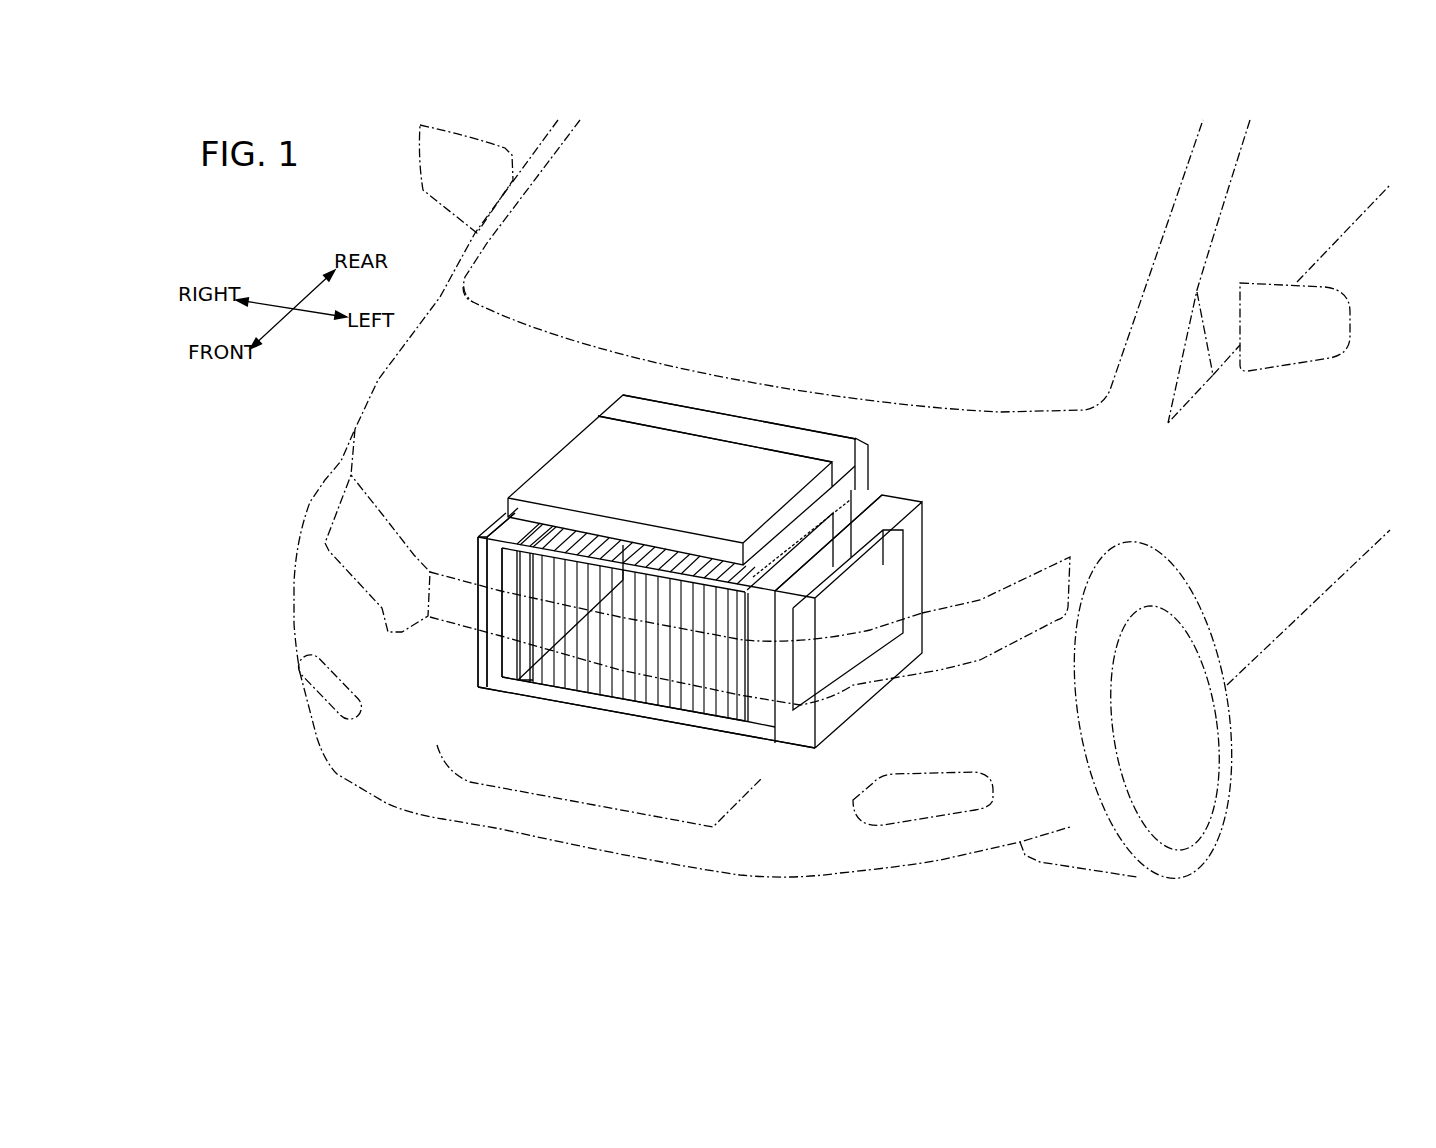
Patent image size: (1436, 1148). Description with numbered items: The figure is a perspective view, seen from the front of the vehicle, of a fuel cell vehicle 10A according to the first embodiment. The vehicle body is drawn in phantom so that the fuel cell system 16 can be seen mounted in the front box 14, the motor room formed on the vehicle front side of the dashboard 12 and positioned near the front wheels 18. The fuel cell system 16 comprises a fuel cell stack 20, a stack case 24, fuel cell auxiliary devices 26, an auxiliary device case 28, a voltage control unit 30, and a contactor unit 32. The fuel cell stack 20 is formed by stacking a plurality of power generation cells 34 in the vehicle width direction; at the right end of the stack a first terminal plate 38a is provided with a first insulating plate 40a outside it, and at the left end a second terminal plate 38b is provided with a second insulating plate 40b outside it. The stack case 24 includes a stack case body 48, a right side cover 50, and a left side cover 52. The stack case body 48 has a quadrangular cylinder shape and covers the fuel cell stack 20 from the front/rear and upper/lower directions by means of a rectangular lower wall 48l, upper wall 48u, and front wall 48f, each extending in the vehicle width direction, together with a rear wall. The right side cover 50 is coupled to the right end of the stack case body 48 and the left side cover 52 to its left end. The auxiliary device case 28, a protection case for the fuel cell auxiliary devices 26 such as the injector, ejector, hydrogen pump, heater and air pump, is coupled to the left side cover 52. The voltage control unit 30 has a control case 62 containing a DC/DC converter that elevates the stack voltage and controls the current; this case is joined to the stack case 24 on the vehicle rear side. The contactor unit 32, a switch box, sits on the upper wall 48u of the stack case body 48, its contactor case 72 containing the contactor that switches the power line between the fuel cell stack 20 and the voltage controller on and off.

The fuel cell vehicle 10A is at (313, 208).
The dashboard 12 is at (738, 393).
The front box 14 is at (946, 462).
The fuel cell system 16 is at (607, 383).
The front wheels 18 is at (1203, 793).
The fuel cell stack 20 is at (511, 534).
The stack case 24 is at (478, 532).
The fuel cell auxiliary devices 26 is at (905, 563).
The auxiliary device case 28 is at (914, 527).
The voltage control unit 30 is at (794, 418).
The contactor unit 32 is at (688, 425).
The power generation cells 34 is at (577, 697).
The first terminal plate 38a is at (484, 650).
The second terminal plate 38b is at (753, 716).
The first insulating plate 40a is at (522, 556).
The second insulating plate 40b is at (733, 722).
The stack case body 48 is at (508, 703).
The front wall 48f is at (608, 705).
The lower wall 48l is at (660, 723).
The upper wall 48u is at (845, 437).
The right side cover 50 is at (478, 667).
The left side cover 52 is at (752, 740).
The control case 62 is at (854, 437).
The contactor case 72 is at (573, 455).